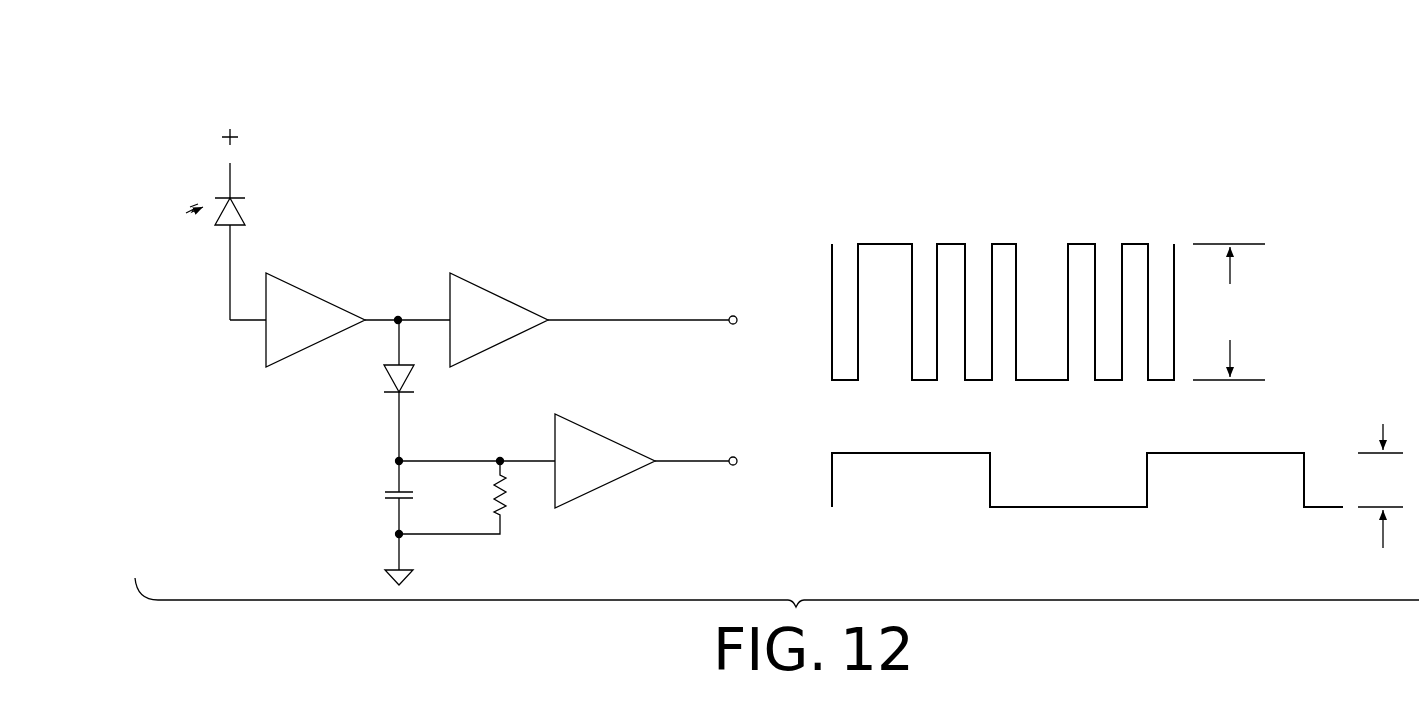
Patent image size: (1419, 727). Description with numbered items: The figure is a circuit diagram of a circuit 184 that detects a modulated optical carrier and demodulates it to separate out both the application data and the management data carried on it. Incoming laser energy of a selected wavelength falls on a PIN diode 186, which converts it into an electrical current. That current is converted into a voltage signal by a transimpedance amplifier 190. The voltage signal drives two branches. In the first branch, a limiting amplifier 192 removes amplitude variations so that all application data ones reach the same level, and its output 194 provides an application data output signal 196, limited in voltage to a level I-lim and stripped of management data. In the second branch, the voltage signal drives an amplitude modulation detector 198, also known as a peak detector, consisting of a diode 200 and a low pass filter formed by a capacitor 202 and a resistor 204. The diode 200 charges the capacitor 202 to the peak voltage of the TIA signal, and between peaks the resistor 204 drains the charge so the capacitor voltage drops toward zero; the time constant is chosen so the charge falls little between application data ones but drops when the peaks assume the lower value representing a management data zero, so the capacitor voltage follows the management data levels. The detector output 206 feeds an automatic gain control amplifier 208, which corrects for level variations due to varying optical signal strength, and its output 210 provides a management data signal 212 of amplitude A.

The circuit 184 is at (551, 186).
The PIN diode 186 is at (270, 186).
The amplitude modulation (AM) detector 198 is at (203, 242).
The transimpedance amplifier (TIA) 190 is at (293, 283).
The limiting amplifier 192 is at (478, 283).
The output 194 is at (618, 320).
The diode 200 is at (361, 394).
The capacitor 202 is at (361, 497).
The resistor 204 is at (521, 521).
The detector output 206 is at (522, 444).
The automatic gain control (AGC) amplifier 208 is at (583, 425).
The output 210 is at (688, 461).
The application data output signal 196 is at (826, 217).
The management data signal 212 is at (905, 526).